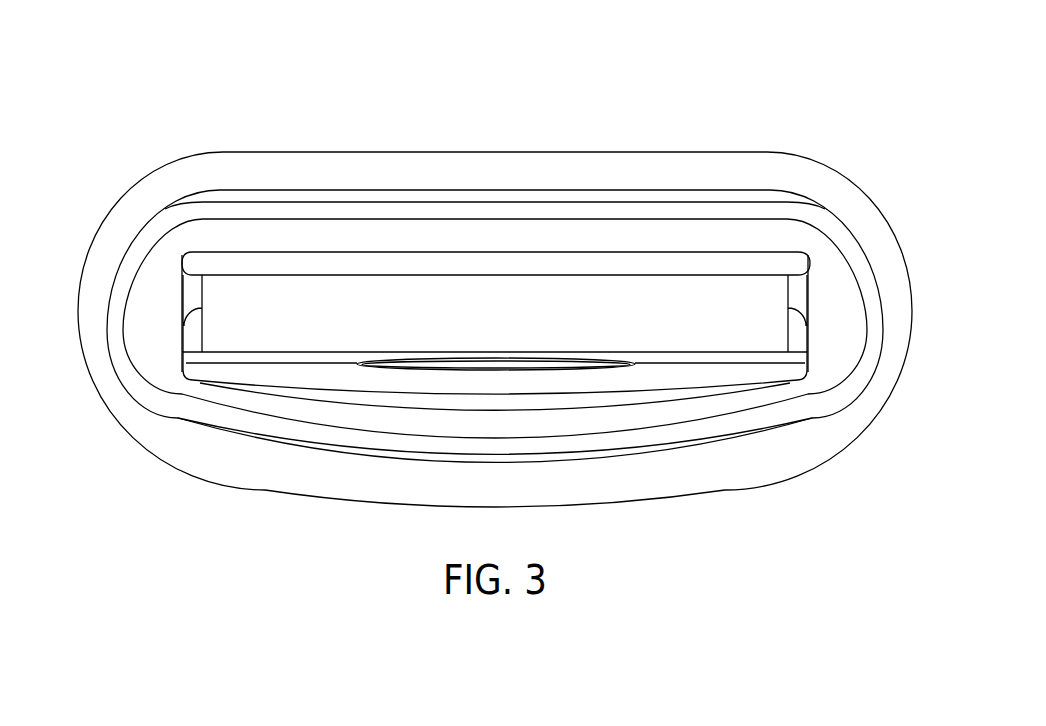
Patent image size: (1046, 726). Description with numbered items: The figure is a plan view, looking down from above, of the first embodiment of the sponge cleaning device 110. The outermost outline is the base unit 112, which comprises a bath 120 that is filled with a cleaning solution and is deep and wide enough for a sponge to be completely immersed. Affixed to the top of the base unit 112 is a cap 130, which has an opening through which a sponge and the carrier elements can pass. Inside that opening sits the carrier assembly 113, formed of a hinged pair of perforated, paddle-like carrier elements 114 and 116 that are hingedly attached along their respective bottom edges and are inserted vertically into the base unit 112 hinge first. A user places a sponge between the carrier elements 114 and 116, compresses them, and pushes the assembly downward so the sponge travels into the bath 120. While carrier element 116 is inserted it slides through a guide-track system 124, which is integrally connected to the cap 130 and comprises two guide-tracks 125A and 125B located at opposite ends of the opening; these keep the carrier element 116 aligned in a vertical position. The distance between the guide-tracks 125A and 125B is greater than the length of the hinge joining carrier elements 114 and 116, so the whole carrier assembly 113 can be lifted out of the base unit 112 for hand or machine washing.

The sponge cleaning device 110 is at (588, 64).
The base unit 112 is at (248, 440).
The cap 130 is at (288, 202).
The carrier element 116 is at (472, 262).
The guide-track system 124 is at (183, 284).
The carrier assembly 113 is at (808, 320).
The guide-track 125A is at (184, 274).
The guide-track 125B is at (812, 274).
The carrier element 114 is at (497, 395).
The bath 120 is at (329, 394).